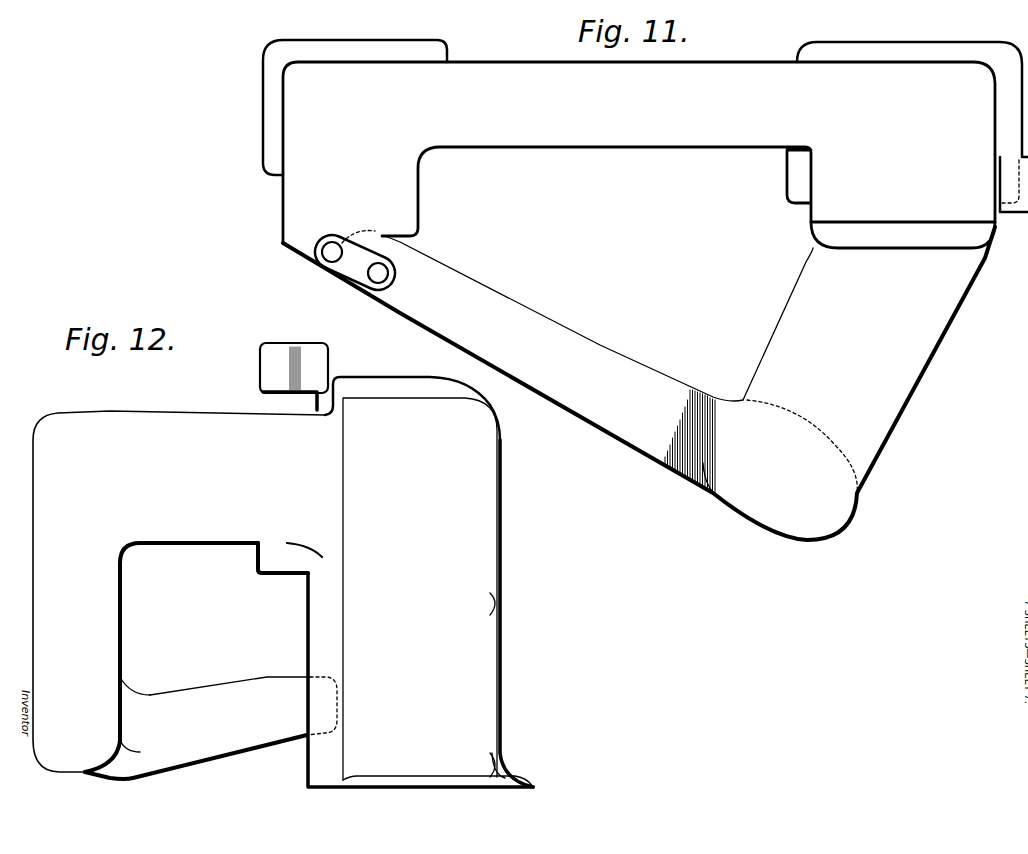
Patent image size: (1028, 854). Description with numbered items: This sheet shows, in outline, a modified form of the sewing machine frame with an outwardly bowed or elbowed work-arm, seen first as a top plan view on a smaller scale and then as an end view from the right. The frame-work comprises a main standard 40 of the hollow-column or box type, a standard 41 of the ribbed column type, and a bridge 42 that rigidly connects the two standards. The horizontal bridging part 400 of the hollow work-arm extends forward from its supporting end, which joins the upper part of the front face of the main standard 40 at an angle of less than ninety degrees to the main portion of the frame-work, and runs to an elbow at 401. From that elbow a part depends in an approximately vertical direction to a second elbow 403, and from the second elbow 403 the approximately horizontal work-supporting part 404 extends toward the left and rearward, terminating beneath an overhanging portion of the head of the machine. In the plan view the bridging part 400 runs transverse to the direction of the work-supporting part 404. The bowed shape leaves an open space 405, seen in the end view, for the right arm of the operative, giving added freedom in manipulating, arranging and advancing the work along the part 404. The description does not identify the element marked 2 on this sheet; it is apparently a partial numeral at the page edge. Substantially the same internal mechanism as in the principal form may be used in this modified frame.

In FIG. 11, the main standard 40 is at (915, 50).
In FIG. 12, the main standard 40 is at (488, 715).
In FIG. 11, the standard 41 is at (285, 217).
In FIG. 12, the standard 41 is at (370, 385).
In FIG. 11, the bridge 42 is at (598, 138).
In FIG. 11, the horizontal bridging part 400 is at (913, 367).
In FIG. 12, the horizontal bridging part 400 is at (207, 535).
In FIG. 11, the elbow 401 is at (777, 523).
In FIG. 12, the elbow 401 is at (62, 432).
In FIG. 12, the second elbow 403 is at (105, 710).
In FIG. 11, the work-supporting part 404 is at (623, 373).
In FIG. 12, the work-supporting part 404 is at (242, 687).
In FIG. 12, the open space 405 is at (179, 624).
In FIG. 12, the frame 2 is at (45, 665).